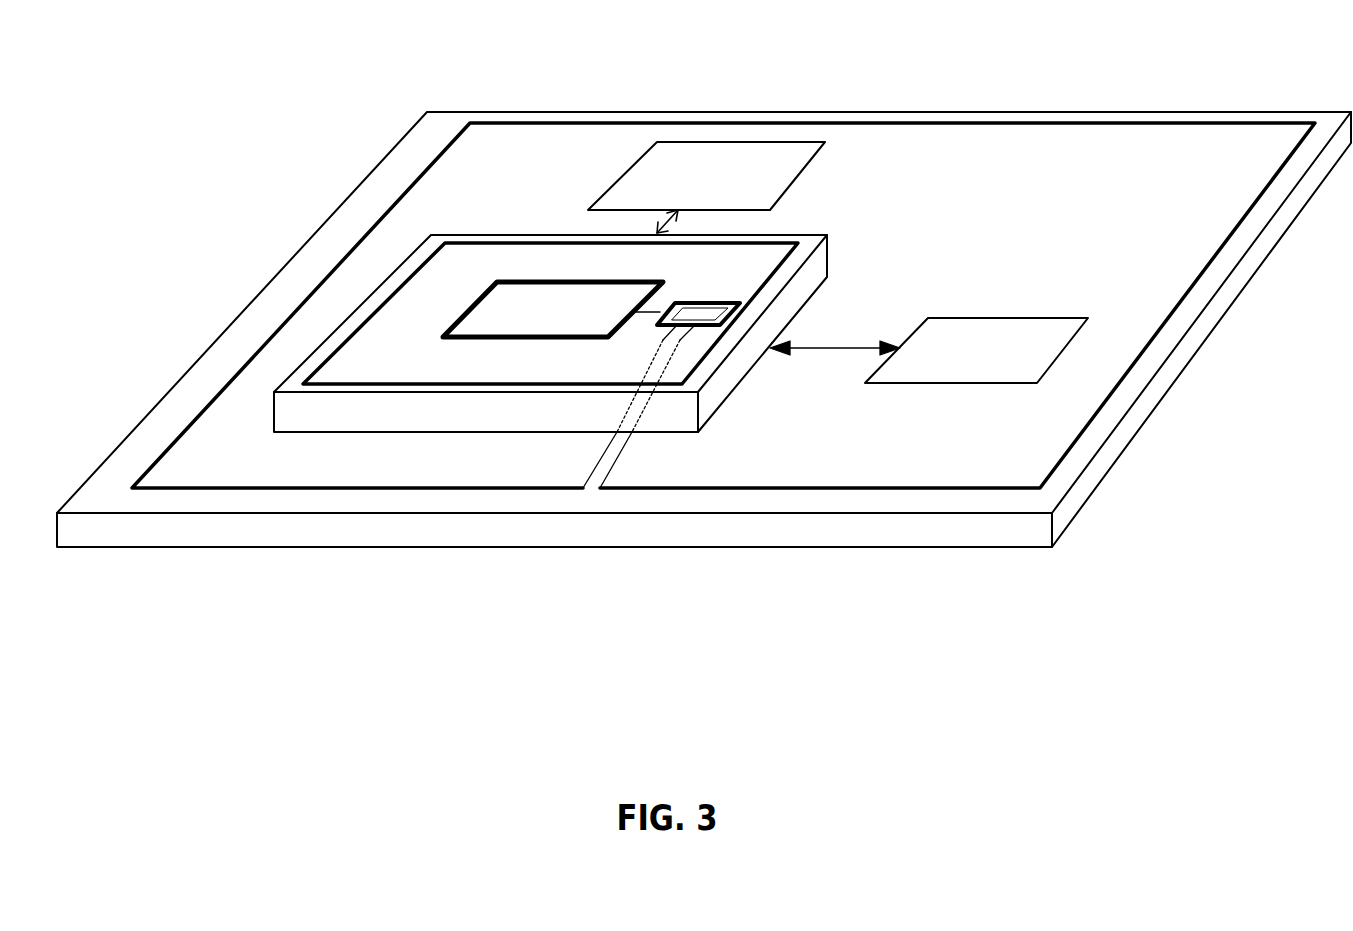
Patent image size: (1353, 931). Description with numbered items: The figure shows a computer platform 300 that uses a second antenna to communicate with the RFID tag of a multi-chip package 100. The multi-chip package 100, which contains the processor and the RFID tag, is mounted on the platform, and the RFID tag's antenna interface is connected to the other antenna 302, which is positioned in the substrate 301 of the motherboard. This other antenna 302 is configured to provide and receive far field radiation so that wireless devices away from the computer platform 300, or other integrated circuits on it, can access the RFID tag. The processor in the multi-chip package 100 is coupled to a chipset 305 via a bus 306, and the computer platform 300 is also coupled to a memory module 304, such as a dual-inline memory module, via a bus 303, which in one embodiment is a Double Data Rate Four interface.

The computer platform 300 is at (741, 64).
The substrate 301 is at (383, 162).
The other antenna 302 is at (327, 275).
The multi-chip package 100 is at (480, 235).
The bus 303 is at (658, 223).
The memory module 304 is at (803, 175).
The chipset 305 is at (977, 318).
The bus 306 is at (808, 347).